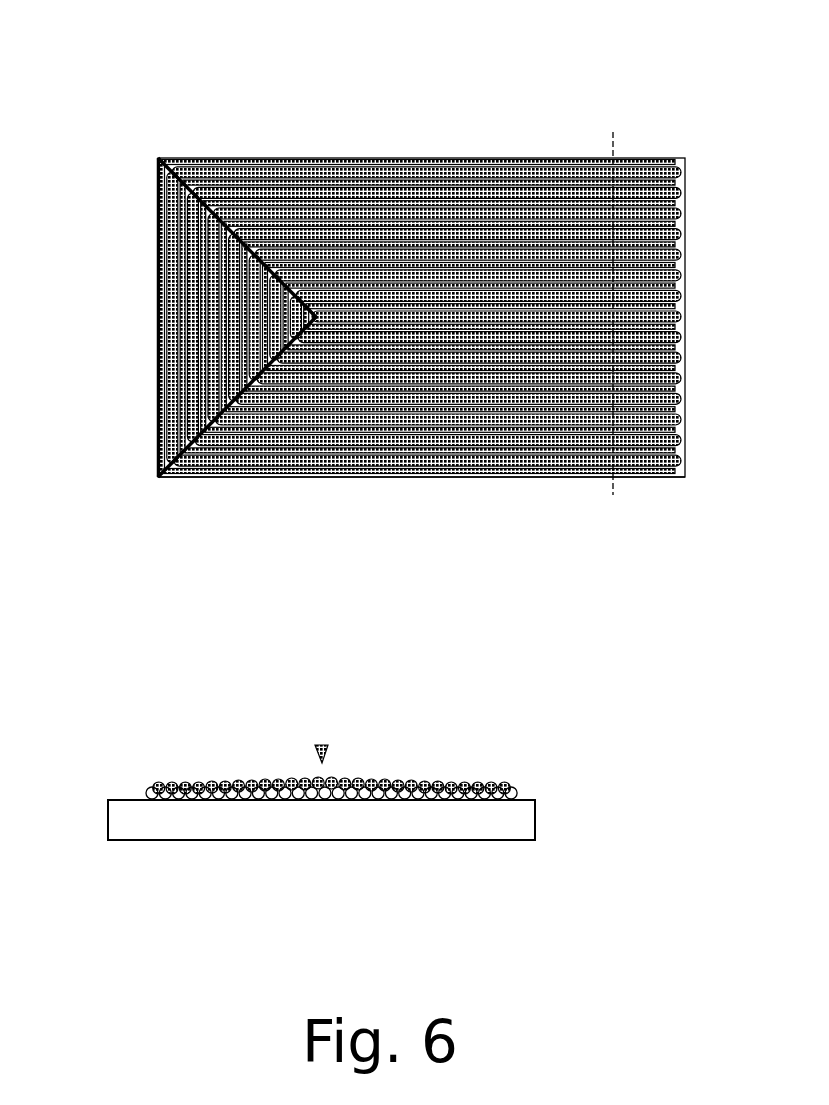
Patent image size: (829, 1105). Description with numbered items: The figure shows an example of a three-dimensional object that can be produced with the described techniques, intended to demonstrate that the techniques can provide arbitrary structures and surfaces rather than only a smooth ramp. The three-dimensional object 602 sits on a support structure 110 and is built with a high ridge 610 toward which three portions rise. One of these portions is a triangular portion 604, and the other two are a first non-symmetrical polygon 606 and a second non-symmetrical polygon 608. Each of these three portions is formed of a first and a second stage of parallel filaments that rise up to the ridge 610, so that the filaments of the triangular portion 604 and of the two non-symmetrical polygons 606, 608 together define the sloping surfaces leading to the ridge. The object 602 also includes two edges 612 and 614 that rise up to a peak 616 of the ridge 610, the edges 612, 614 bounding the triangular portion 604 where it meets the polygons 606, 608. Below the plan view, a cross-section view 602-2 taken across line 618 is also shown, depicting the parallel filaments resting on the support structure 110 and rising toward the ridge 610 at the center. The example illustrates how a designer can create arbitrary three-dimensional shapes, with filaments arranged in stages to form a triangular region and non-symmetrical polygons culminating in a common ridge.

The 3D object 602 is at (653, 145).
The cross-section view 602-2 is at (408, 765).
The triangular portion 604 is at (142, 297).
The first non-symmetrical polygon 606 is at (702, 202).
The second non-symmetrical polygon 608 is at (702, 362).
The ridge 610 is at (445, 322).
The edge 612 is at (157, 178).
The edge 614 is at (157, 455).
The peak 616 is at (312, 305).
The line 618 is at (612, 150).
The support structure 110 is at (187, 478).